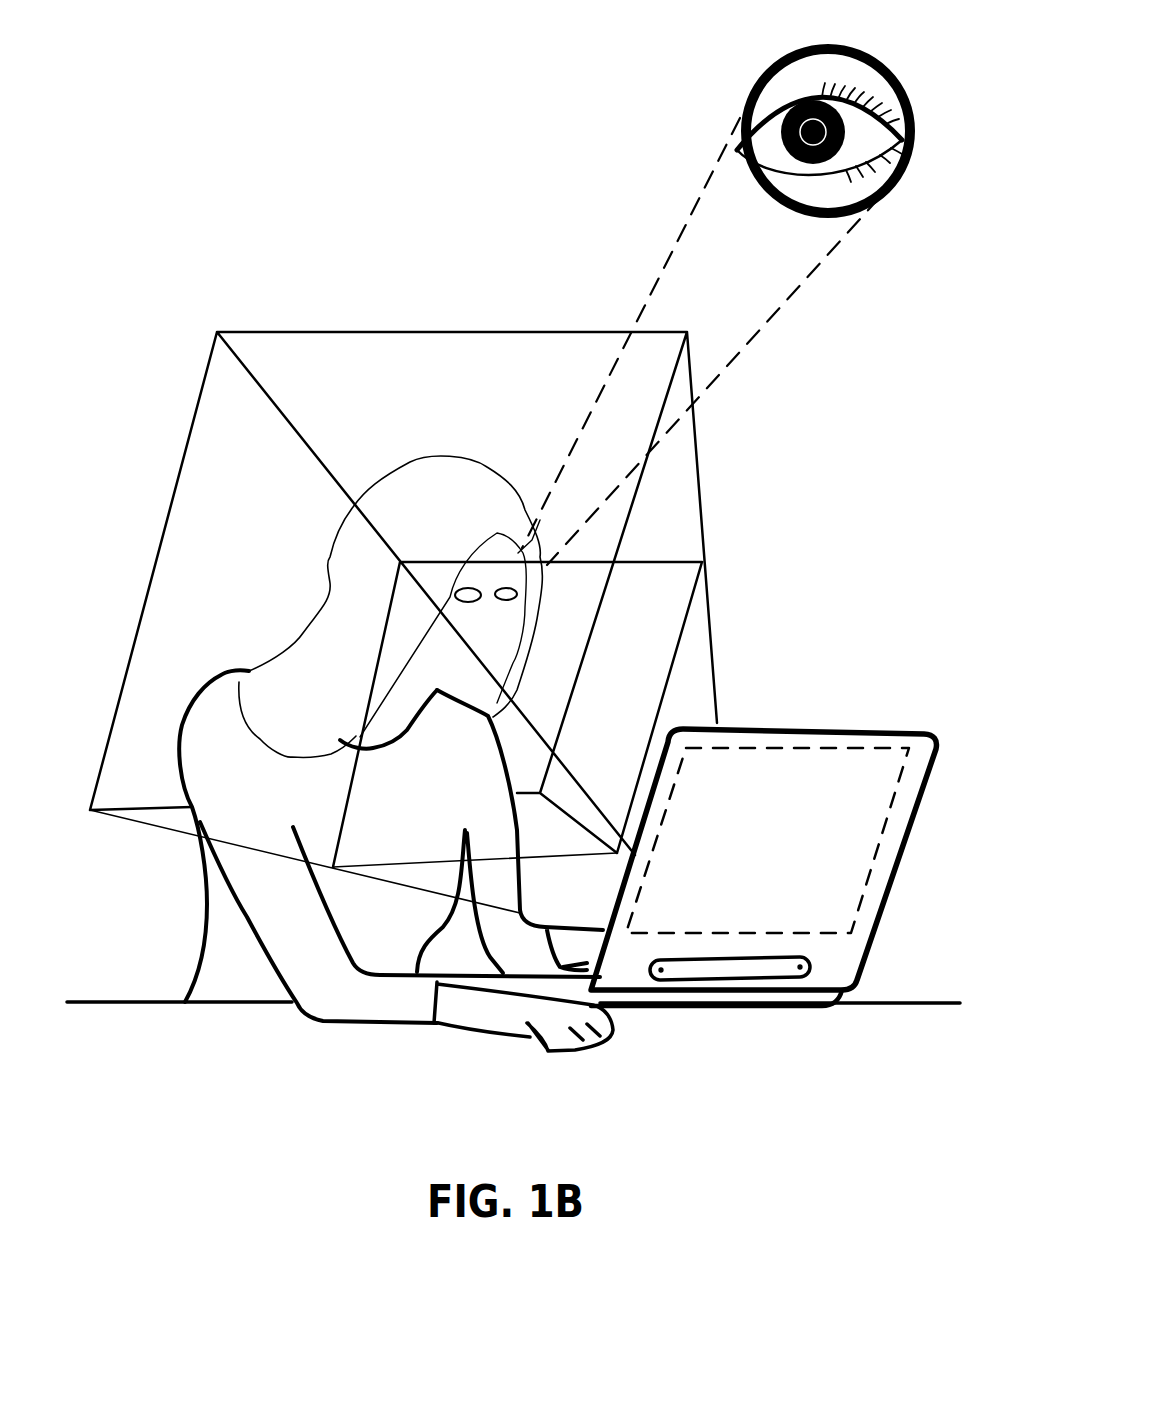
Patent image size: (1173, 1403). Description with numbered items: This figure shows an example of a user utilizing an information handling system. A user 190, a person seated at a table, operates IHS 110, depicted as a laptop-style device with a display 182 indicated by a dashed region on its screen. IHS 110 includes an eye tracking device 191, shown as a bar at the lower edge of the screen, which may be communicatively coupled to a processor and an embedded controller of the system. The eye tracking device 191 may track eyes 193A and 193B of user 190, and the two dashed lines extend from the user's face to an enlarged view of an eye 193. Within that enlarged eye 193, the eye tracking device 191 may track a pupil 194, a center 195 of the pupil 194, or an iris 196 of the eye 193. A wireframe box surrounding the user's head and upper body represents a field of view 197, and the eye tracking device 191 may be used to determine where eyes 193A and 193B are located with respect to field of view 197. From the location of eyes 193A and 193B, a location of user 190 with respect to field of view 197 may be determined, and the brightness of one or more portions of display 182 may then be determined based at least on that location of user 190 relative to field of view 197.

The information handling system 110 is at (900, 732).
The display 182 is at (877, 853).
The user 190 is at (221, 675).
The eye tracking device 191 is at (820, 958).
The eye 193 is at (765, 135).
The eye 193A is at (456, 598).
The eye 193B is at (505, 577).
The pupil 194 is at (803, 142).
The center of pupil 195 is at (813, 135).
The iris 196 is at (787, 118).
The field of view 197 is at (440, 332).